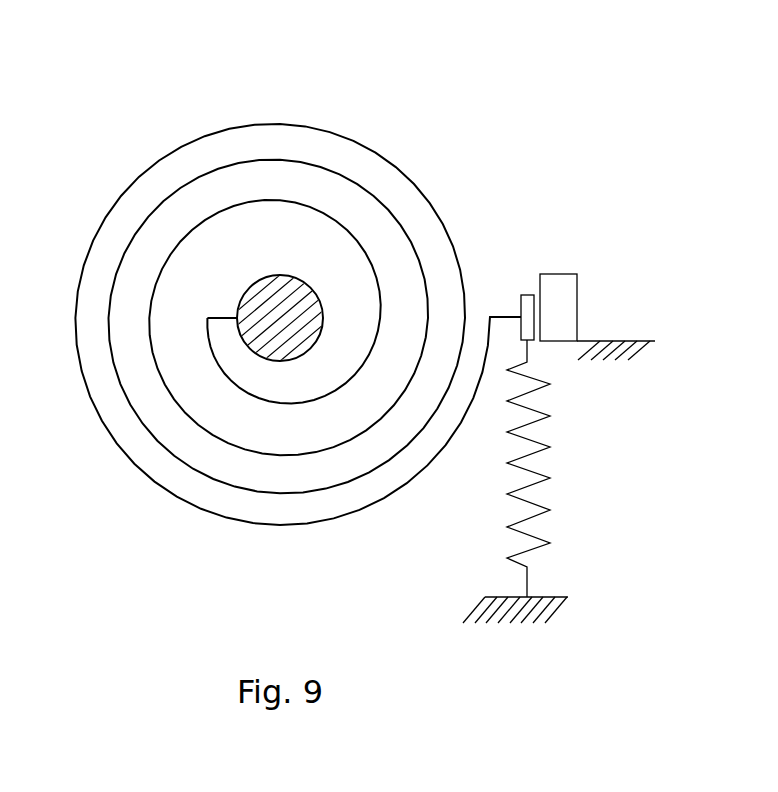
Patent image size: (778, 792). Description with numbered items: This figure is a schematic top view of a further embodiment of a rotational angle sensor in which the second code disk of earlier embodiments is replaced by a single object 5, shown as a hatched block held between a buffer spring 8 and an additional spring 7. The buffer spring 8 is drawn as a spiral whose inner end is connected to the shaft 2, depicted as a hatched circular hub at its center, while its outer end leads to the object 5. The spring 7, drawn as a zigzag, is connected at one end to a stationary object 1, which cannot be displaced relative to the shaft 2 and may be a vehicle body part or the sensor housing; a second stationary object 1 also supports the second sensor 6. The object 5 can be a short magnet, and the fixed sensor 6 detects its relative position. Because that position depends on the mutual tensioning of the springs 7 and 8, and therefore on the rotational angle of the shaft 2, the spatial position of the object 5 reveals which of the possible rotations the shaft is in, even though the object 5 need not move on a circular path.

The stationary object 1 is at (613, 340).
The shaft 2 is at (268, 307).
The object 5 is at (525, 297).
The second sensor 6 is at (572, 285).
The spring 7 is at (542, 473).
The buffer spring 8 is at (398, 168).